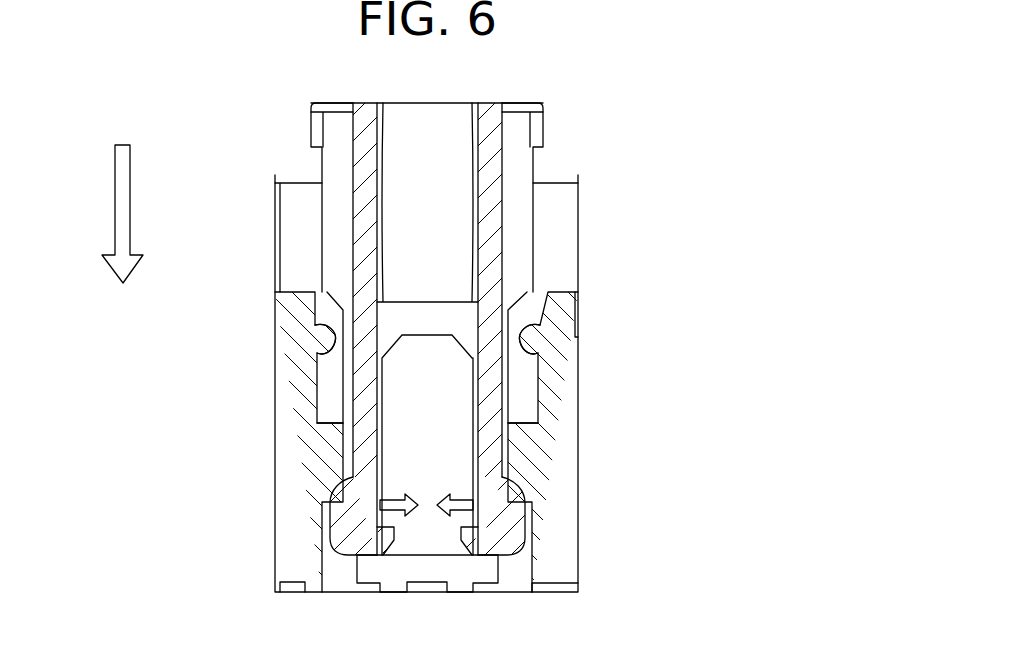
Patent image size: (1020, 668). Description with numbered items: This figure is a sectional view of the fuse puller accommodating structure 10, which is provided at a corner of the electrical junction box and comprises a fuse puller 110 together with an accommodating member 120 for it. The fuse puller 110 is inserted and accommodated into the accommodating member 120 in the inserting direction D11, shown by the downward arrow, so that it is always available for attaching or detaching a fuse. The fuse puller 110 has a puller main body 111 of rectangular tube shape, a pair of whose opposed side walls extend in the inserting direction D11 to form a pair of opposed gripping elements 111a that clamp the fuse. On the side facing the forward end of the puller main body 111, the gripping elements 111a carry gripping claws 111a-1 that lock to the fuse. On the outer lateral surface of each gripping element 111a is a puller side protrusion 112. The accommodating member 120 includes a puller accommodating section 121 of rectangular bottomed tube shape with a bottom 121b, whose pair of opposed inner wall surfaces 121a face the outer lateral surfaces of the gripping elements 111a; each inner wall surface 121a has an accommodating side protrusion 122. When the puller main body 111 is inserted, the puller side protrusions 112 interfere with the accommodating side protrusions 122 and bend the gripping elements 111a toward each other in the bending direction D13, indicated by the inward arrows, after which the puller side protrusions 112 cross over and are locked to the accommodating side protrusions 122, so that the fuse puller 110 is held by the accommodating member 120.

The fuse puller accommodating structure 10 is at (443, 83).
The fuse puller 110 is at (519, 95).
The puller main body 111 is at (335, 102).
The gripping elements 111a is at (353, 218).
The gripping claws 111a-1 is at (385, 541).
The puller side protrusions 112 is at (333, 500).
The accommodating member 120 is at (560, 291).
The puller accommodating section 121 is at (578, 351).
The inner wall surfaces 121a is at (325, 337).
The bottom 121b is at (440, 547).
The accommodating side protrusions 122 is at (330, 416).
The inserting direction D11 is at (115, 203).
The bending direction D13 is at (457, 497).